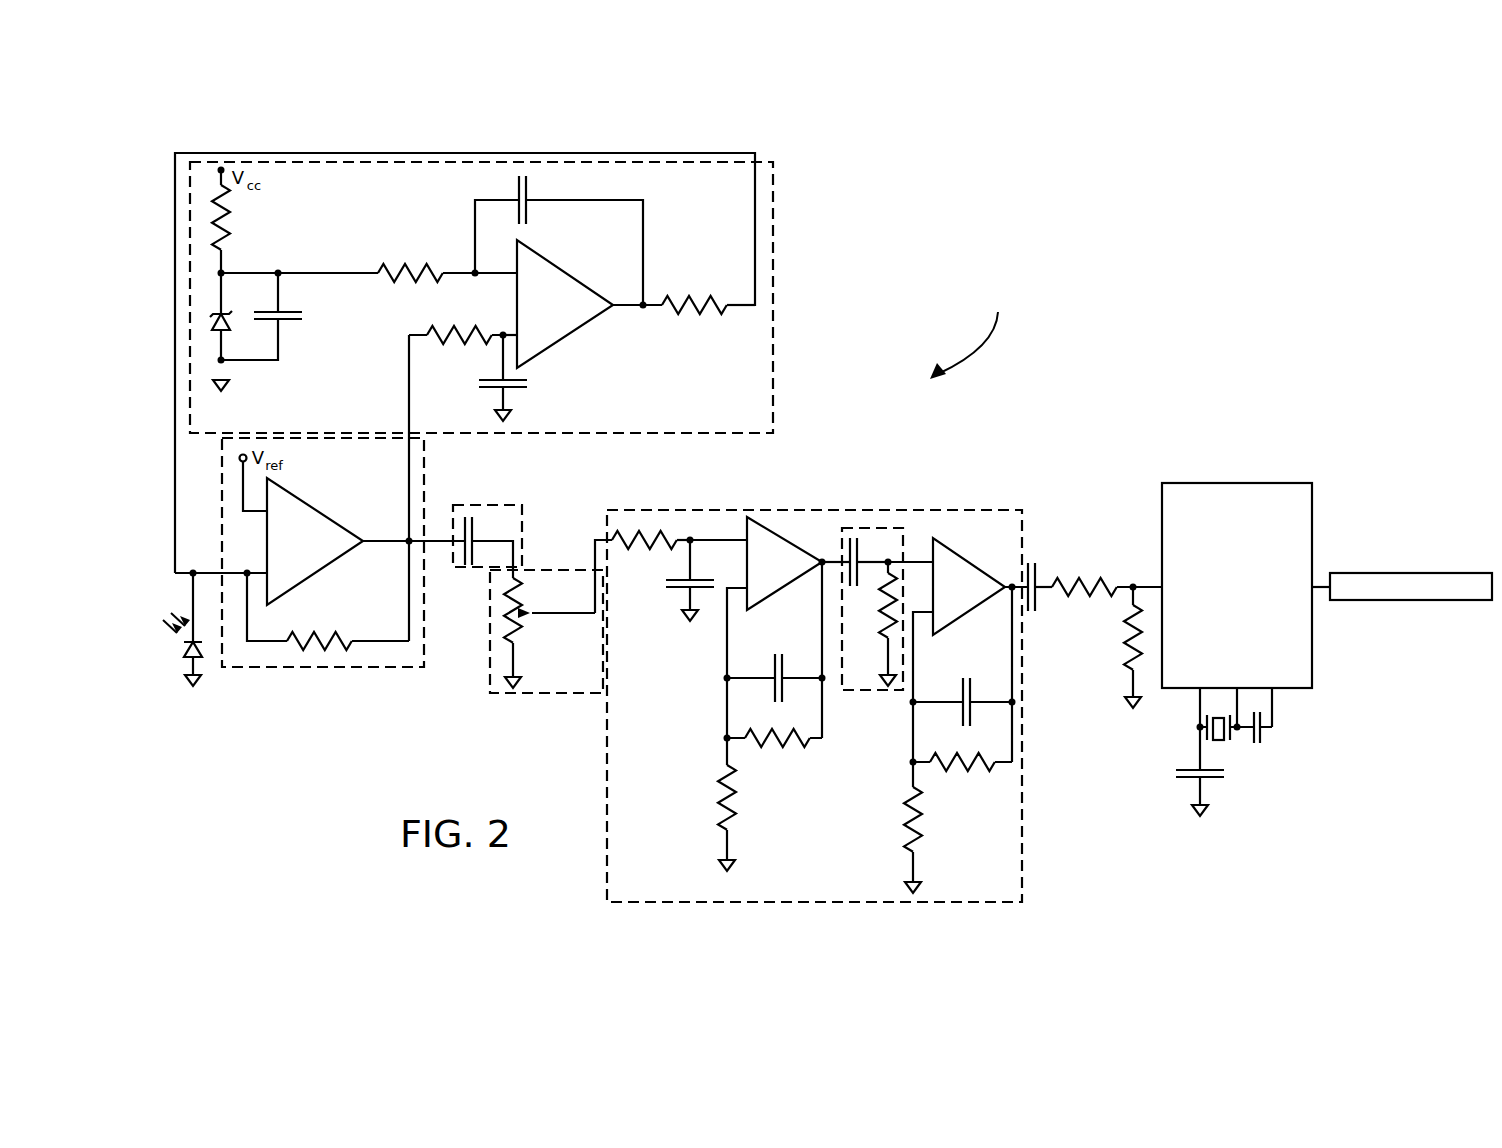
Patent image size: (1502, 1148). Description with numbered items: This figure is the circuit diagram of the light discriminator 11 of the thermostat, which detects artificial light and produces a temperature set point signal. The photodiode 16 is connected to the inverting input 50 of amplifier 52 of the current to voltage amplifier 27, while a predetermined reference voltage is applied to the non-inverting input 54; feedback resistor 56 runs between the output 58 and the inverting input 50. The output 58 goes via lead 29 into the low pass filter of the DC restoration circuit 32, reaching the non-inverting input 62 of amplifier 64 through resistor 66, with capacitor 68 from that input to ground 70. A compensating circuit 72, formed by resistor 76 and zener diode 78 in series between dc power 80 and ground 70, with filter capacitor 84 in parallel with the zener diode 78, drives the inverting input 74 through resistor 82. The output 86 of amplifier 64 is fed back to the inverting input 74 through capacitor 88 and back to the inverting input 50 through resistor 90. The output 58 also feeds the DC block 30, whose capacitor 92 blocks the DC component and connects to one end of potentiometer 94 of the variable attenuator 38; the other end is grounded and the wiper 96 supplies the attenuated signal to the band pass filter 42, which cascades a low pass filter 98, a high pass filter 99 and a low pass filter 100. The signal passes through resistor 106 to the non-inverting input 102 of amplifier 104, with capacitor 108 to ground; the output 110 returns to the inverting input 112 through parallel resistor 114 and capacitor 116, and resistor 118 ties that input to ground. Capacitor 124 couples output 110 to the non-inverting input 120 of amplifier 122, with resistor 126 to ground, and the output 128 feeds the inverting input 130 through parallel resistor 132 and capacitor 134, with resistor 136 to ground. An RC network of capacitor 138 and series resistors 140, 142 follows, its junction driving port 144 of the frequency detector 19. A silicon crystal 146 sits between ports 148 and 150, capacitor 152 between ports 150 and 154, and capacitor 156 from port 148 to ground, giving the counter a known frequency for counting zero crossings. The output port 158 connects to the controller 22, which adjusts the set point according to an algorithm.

The light discriminator 11 is at (970, 331).
The photodiode 16 is at (193, 636).
The frequency detector 19 is at (1201, 483).
The controller 22 is at (1405, 573).
The current to voltage amplifier 27 is at (290, 667).
The lead 29 is at (409, 402).
The DC block 30 is at (480, 505).
The DC restoration circuit 32 is at (773, 220).
The variable attenuator 38 is at (535, 693).
The band pass filter 42 is at (892, 510).
The inverting input 50 is at (264, 568).
The amplifier 52 is at (308, 509).
The non-inverting input 54 is at (260, 520).
The feedback resistor 56 is at (316, 634).
The output 58 is at (390, 540).
The non-inverting input 62 is at (503, 330).
The amplifier 64 is at (579, 327).
The resistor 66 is at (430, 332).
The capacitor 68 is at (528, 385).
The ground 70 is at (227, 386).
The compensating circuit 72 is at (248, 268).
The inverting input 74 is at (517, 270).
The resistor 76 is at (229, 223).
The zener diode 78 is at (228, 325).
The dc power 80 is at (221, 168).
The resistor 82 is at (392, 268).
The filter capacitor 84 is at (292, 314).
The output 86 is at (632, 301).
The capacitor 88 is at (532, 192).
The resistor 90 is at (690, 292).
The capacitor 92 is at (475, 535).
The potentiometer 94 is at (522, 608).
The wiper 96 is at (553, 615).
The low pass filter 98 is at (780, 525).
The high pass filter 99 is at (870, 692).
The low pass filter 100 is at (955, 538).
The non-inverting input 102 is at (735, 538).
The amplifier 104 is at (784, 587).
The resistor 106 is at (610, 532).
The capacitor 108 is at (674, 586).
The output 110 is at (822, 560).
The inverting input 112 is at (745, 595).
The resistor 114 is at (778, 743).
The capacitor 116 is at (775, 666).
The resistor 118 is at (735, 809).
The non-inverting input 120 is at (913, 561).
The amplifier 122 is at (983, 579).
The capacitor 124 is at (859, 547).
The resistor 126 is at (896, 640).
The output 128 is at (1012, 596).
The inverting input 130 is at (923, 620).
The resistor 132 is at (965, 766).
The capacitor 134 is at (966, 687).
The resistor 136 is at (924, 820).
The capacitor 138 is at (1036, 570).
The resistor 140 is at (1081, 581).
The resistor 142 is at (1127, 645).
The port 144 is at (1149, 584).
The silicon crystal 146 is at (1220, 743).
The port 148 is at (1198, 688).
The port 150 is at (1237, 688).
The capacitor 152 is at (1268, 736).
The port 154 is at (1272, 688).
The capacitor 156 is at (1192, 768).
The output port 158 is at (1314, 584).